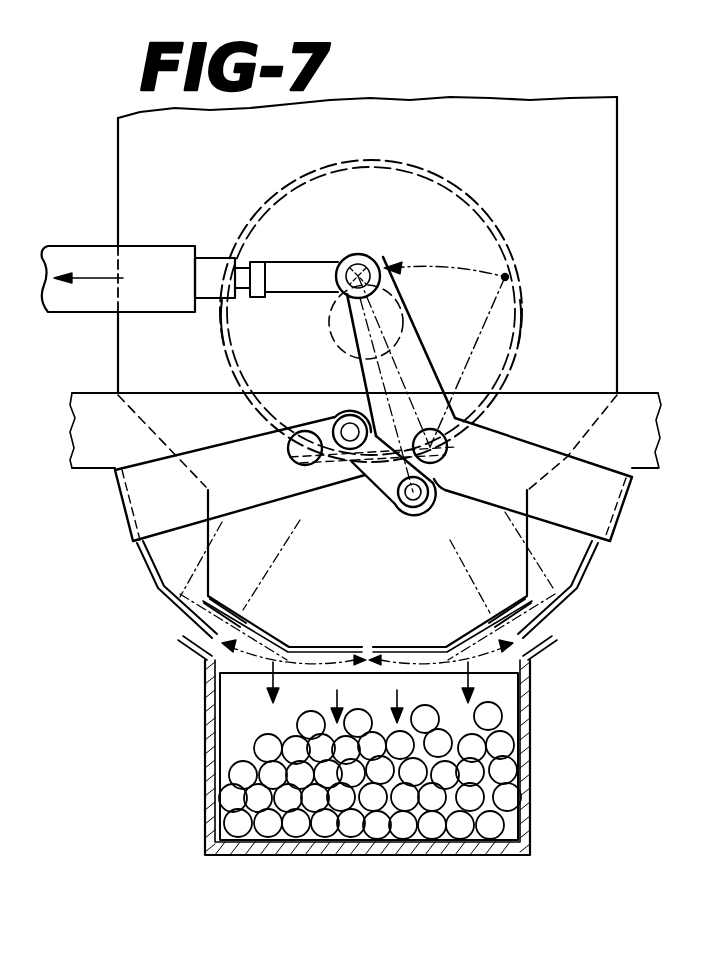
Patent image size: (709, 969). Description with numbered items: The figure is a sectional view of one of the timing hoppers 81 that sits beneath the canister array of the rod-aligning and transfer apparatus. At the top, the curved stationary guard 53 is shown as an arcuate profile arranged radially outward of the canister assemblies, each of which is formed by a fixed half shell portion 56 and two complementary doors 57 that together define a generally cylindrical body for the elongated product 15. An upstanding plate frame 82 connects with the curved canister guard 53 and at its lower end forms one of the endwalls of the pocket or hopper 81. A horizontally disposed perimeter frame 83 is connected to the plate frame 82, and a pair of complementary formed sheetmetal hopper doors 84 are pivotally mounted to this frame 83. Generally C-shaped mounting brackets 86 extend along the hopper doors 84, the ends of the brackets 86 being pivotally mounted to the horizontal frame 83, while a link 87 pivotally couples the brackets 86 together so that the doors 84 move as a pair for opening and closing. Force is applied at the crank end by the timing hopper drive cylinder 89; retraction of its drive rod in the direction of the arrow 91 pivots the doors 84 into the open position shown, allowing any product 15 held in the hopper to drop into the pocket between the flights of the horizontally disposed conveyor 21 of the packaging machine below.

The bulk products 15 is at (488, 792).
The flight-equipped horizontally disposed conveyor 21 is at (500, 856).
The stationary guard 53 is at (618, 222).
The fixed half shell portion 56 is at (420, 168).
The complementary doors 57 is at (216, 357).
The timing hopper 81 is at (147, 598).
The upstanding plate frame 82 is at (428, 588).
The horizontally disposed perimeter frame 83 is at (652, 470).
The hopper doors 84 is at (182, 615).
The C-shaped mounting brackets 86 is at (150, 509).
The link 87 is at (375, 478).
The timing hopper drive cylinder 89 is at (173, 247).
The arrow 91 is at (91, 277).